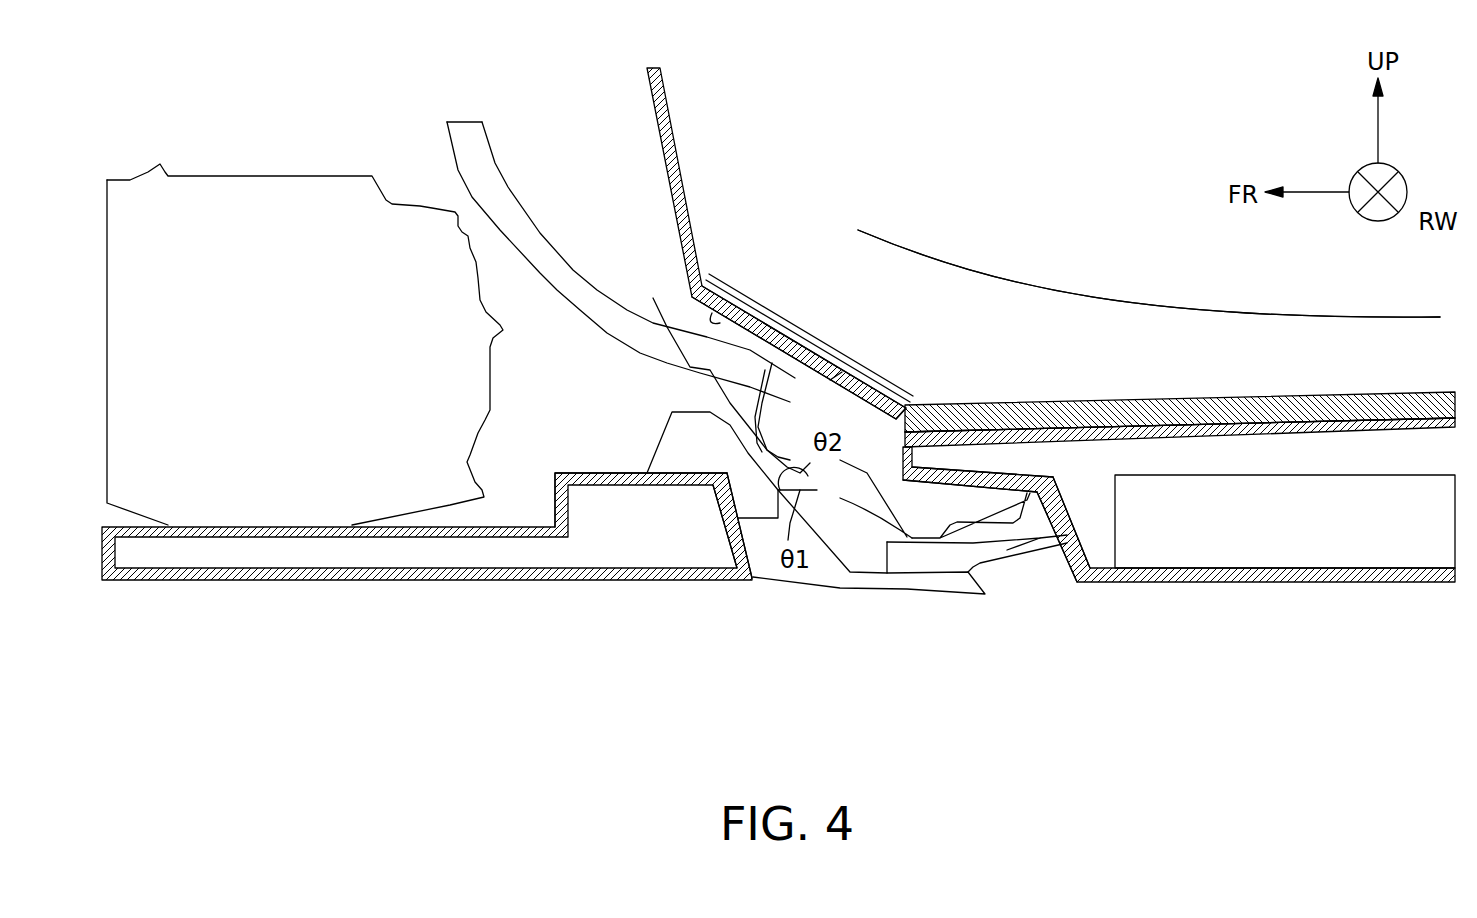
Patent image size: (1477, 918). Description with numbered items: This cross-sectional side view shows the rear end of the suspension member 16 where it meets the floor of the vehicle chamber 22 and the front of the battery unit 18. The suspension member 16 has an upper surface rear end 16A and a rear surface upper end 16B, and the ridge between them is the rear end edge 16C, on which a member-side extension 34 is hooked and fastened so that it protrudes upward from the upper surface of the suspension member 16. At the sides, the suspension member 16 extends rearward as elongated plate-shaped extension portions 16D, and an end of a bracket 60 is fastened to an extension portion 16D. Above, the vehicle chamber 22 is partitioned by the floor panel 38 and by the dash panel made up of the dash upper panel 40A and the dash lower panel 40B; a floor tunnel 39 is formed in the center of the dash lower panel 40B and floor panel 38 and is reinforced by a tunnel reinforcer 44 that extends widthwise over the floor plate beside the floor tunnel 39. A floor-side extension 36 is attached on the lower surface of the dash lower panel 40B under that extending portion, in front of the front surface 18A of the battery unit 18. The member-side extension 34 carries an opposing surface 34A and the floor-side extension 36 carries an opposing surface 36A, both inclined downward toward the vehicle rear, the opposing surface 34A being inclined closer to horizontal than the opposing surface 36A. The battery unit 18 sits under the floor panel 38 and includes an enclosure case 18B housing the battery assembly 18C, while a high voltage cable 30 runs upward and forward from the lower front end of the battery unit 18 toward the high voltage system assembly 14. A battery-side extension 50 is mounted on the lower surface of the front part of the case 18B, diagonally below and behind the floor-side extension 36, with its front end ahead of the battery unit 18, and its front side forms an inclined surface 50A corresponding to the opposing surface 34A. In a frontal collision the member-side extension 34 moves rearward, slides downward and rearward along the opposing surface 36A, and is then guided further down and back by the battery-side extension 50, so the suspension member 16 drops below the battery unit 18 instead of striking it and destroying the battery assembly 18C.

The high voltage system assembly 14 is at (268, 136).
The suspension member 16 is at (487, 578).
The upper surface rear end 16A is at (602, 472).
The rear surface upper end 16B is at (740, 547).
The rear end edge 16C is at (762, 365).
The extension portion 16D is at (930, 585).
The battery unit 18 is at (1240, 586).
The front surface 18A is at (907, 440).
The enclosure case 18B is at (1138, 582).
The battery assembly 18C is at (1400, 547).
The vehicle chamber 22 is at (1097, 199).
The high voltage cable 30 is at (557, 250).
The member-side extension 34 is at (650, 472).
The opposing surface 34A is at (658, 298).
The floor-side extension 36 is at (847, 428).
The opposing surface 36A is at (830, 380).
The floor panel 38 is at (1258, 404).
The floor tunnel 39 is at (987, 271).
The dash upper panel 40A is at (657, 130).
The dash lower panel 40B is at (740, 300).
The tunnel reinforcer 44 is at (1003, 405).
The battery-side extension 50 is at (953, 507).
The inclined surface 50A is at (867, 475).
The bracket 60 is at (1007, 550).